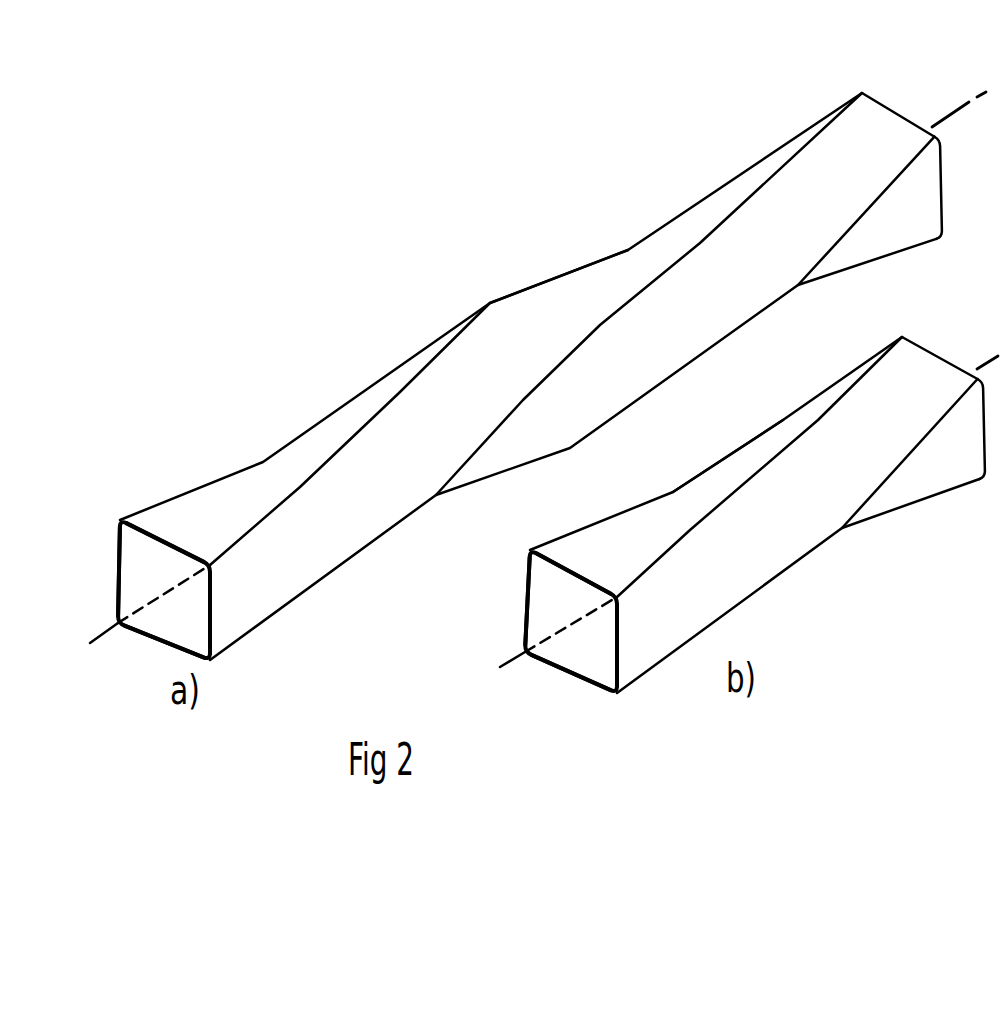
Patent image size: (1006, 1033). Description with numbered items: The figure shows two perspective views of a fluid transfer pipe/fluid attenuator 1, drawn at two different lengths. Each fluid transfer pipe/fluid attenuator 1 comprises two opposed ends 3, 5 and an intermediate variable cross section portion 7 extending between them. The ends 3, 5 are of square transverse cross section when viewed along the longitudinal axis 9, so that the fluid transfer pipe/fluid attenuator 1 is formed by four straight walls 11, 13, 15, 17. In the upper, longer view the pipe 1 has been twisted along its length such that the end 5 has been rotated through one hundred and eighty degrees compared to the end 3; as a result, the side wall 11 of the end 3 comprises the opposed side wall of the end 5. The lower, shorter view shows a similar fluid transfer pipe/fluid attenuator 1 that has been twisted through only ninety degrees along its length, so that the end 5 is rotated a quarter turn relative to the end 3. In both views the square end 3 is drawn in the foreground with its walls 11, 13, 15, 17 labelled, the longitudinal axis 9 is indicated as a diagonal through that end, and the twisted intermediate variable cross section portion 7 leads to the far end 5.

The fluid transfer pipe/fluid attenuator 1 is at (447, 196).
The end 3 is at (137, 662).
The end 5 is at (918, 97).
The intermediate variable cross section portion 7 is at (514, 322).
The longitudinal axis 9 is at (106, 631).
The straight wall 11 is at (212, 613).
The straight wall 13 is at (174, 542).
The straight wall 15 is at (118, 555).
The straight wall 17 is at (158, 642).